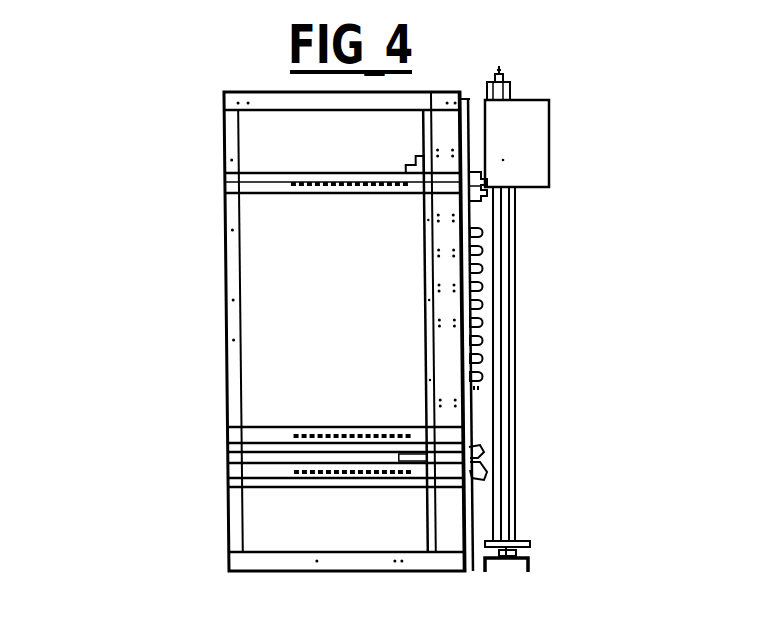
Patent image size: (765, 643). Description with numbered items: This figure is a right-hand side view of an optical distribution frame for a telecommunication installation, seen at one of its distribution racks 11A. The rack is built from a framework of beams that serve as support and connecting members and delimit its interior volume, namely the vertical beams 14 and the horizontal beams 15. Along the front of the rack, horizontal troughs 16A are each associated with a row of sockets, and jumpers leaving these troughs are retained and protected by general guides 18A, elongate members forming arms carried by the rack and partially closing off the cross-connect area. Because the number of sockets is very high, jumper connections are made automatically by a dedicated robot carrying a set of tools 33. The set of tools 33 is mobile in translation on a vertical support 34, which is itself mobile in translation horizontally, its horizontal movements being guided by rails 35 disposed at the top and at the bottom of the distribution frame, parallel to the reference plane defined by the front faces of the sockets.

The distribution rack 11A is at (262, 305).
The vertical beams 14 is at (228, 163).
The horizontal beams 15 is at (285, 100).
The troughs 16A is at (484, 360).
The general guides 18A is at (484, 193).
The set of tools 33 is at (523, 140).
The vertical support 34 is at (500, 283).
The rails 35 is at (474, 95).